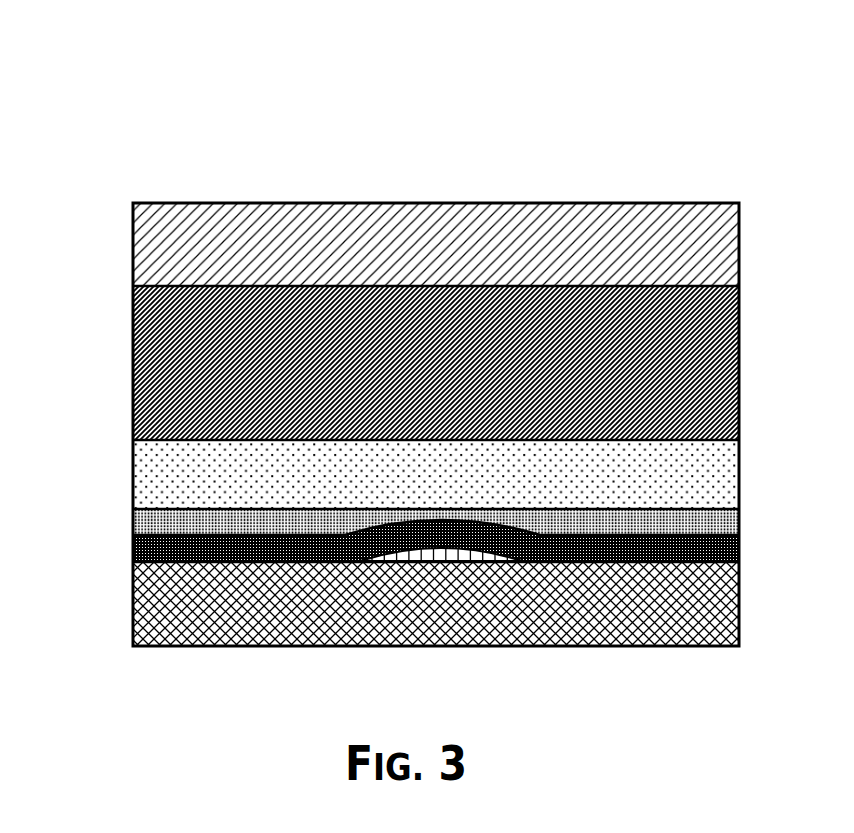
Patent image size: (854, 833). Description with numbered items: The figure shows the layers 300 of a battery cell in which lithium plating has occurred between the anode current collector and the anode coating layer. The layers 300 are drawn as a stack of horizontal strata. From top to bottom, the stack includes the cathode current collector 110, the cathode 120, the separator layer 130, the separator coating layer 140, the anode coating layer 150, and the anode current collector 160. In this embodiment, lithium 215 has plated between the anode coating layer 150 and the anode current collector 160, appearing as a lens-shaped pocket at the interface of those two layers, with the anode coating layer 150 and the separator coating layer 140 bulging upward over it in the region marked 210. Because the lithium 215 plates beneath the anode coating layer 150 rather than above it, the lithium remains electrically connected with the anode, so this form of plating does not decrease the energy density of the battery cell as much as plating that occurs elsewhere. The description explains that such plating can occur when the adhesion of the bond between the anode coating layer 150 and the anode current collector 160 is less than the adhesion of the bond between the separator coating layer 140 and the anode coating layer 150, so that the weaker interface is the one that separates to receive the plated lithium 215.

The layers 300 is at (383, 327).
The cathode current collector 110 is at (133, 215).
The cathode 120 is at (133, 320).
The separator layer 130 is at (133, 440).
The separator coating layer 140 is at (133, 510).
The anode coating layer 150 is at (394, 519).
The anode current collector 160 is at (133, 620).
The raised portion 210 is at (387, 539).
The lithium 215 is at (453, 551).